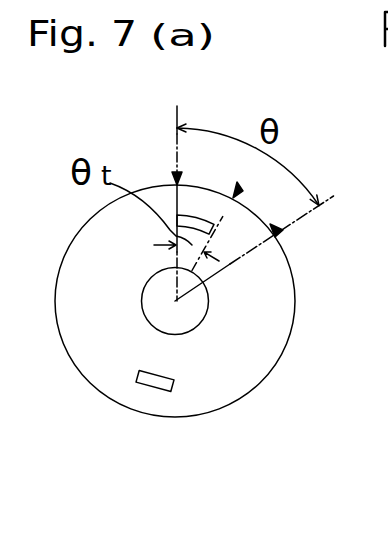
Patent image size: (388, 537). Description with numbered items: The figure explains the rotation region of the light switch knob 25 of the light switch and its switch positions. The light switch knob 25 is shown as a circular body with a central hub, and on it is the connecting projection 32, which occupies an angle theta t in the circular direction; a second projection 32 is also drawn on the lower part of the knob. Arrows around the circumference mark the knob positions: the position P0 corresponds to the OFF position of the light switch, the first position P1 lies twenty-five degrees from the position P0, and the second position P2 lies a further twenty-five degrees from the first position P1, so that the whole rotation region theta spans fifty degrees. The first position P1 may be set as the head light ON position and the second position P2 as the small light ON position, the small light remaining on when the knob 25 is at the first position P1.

The light switch knob 25 is at (217, 412).
The connecting projection 32 is at (218, 231).
The position P0 is at (161, 160).
The first position P1 is at (228, 207).
The second position P2 is at (254, 248).